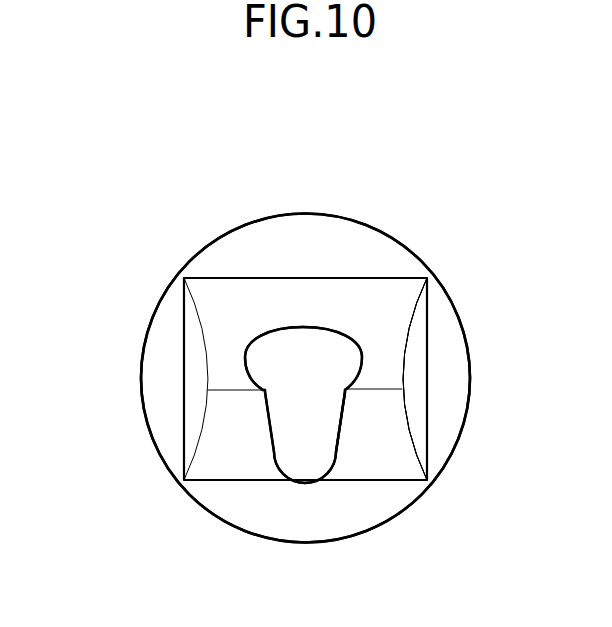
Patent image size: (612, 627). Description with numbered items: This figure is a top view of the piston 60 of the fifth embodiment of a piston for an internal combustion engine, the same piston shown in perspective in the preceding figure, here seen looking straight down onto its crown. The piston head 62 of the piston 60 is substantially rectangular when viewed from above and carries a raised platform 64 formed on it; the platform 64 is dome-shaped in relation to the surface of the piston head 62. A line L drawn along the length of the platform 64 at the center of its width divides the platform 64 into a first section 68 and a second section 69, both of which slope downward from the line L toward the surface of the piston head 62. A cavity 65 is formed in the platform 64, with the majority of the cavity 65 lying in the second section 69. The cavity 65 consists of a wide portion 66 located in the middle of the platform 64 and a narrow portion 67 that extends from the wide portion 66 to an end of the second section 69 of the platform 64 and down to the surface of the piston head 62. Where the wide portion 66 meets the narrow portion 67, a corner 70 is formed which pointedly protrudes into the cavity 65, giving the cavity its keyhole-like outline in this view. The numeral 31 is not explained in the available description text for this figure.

The valve member 31 is at (295, 186).
The piston 60 is at (212, 515).
The piston head 62 is at (247, 245).
The raised platform 64 is at (362, 288).
The cavity 65 is at (82, 463).
The wide portion 66 is at (265, 352).
The narrow portion 67 is at (285, 408).
The first section 68 is at (398, 315).
The second section 69 is at (398, 437).
The corner 70 is at (334, 438).
The line L is at (383, 388).